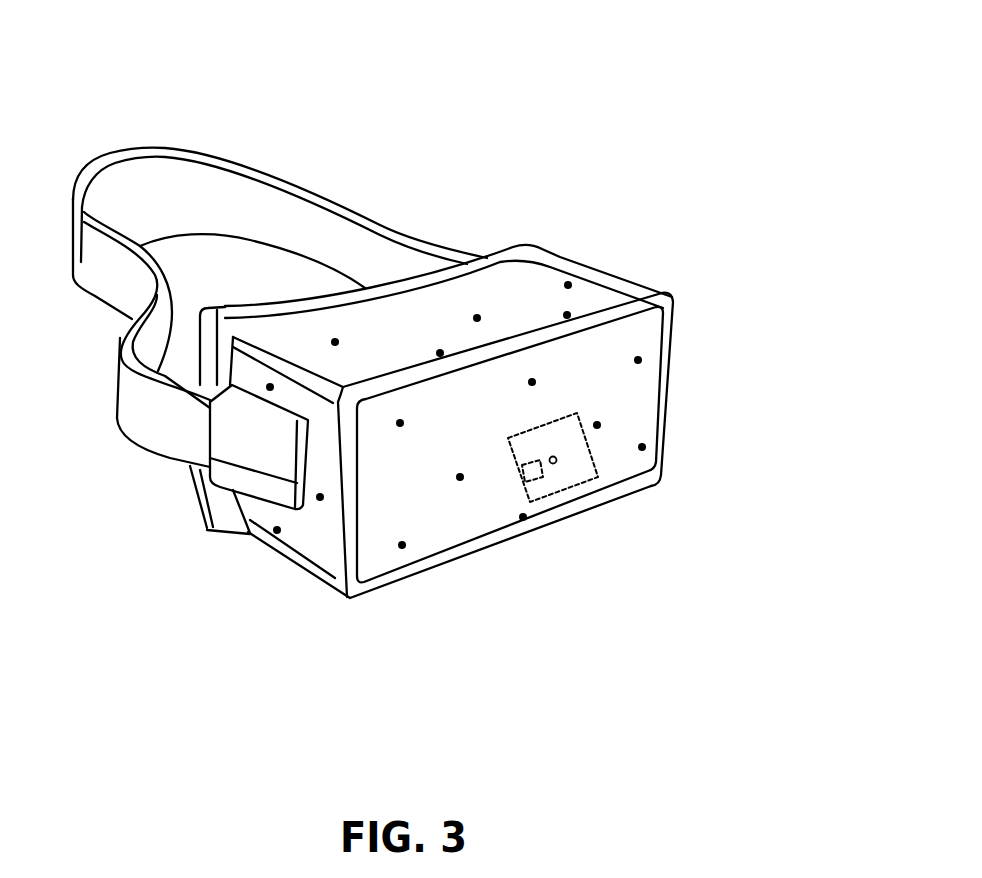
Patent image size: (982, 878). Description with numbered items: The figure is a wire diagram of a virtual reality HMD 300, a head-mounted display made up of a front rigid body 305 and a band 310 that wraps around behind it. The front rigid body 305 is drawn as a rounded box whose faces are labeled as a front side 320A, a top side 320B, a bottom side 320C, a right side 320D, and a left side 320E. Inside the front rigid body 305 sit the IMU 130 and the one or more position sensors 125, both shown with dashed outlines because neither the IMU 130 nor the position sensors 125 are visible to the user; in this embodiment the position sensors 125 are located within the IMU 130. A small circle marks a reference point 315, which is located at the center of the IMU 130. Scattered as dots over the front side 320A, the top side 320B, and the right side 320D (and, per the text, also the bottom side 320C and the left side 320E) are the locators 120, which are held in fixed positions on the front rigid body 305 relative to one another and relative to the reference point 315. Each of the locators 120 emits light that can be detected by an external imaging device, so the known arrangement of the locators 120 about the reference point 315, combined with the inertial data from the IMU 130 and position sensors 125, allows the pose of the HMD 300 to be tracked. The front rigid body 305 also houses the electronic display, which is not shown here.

The virtual reality HMD 300 is at (397, 28).
The band 310 is at (382, 219).
The front rigid body 305 is at (677, 340).
The front side 320A is at (423, 556).
The top side 320B is at (612, 297).
The bottom side 320C is at (254, 541).
The right side 320D is at (325, 540).
The left side 320E is at (611, 285).
The locators 120 is at (637, 447).
The position sensors 125 is at (537, 476).
The IMU 130 is at (609, 468).
The reference point 315 is at (556, 467).